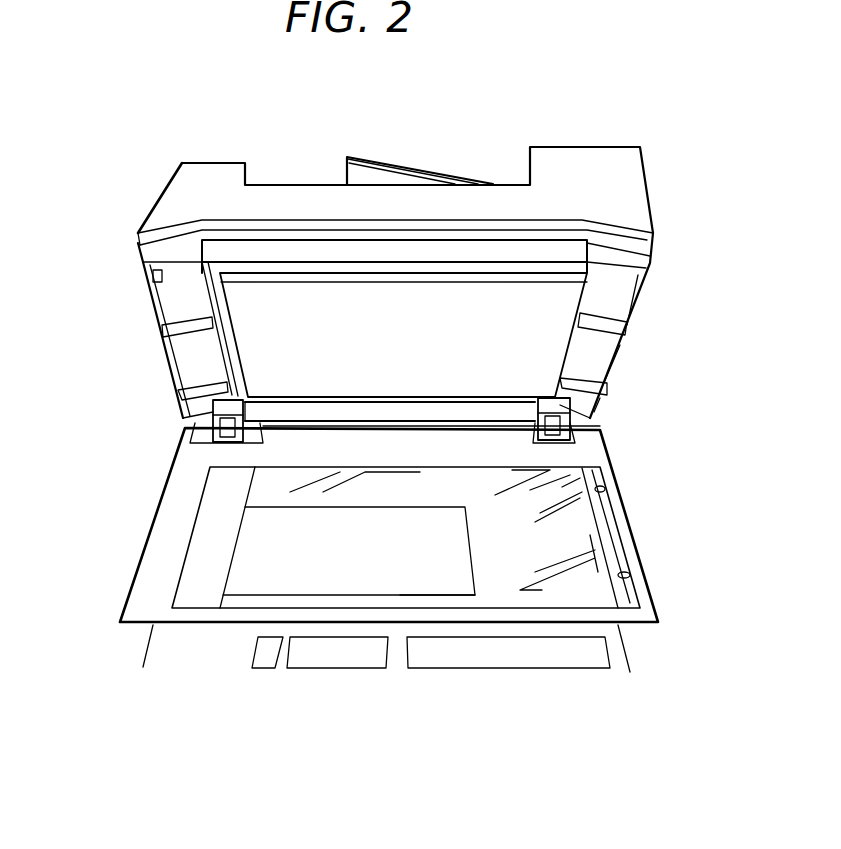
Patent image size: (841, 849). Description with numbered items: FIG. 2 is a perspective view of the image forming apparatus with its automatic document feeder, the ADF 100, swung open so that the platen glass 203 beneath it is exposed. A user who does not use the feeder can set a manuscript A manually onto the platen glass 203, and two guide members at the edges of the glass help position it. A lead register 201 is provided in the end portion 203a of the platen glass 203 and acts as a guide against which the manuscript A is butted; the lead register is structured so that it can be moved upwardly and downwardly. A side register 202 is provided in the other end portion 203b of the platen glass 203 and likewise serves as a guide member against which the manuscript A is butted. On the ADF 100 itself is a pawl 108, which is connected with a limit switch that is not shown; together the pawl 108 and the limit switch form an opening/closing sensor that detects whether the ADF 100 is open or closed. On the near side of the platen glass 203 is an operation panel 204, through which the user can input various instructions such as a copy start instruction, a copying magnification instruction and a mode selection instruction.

The ADF 100 is at (647, 332).
The pawl 108 is at (192, 445).
The lead register 201 is at (192, 580).
The side register 202 is at (593, 602).
The platen glass 203 is at (572, 538).
The end portion of platen glass 203a is at (248, 487).
The end portion of platen glass 203b is at (414, 597).
The operation panel 204 is at (553, 667).
The manuscript A is at (273, 583).